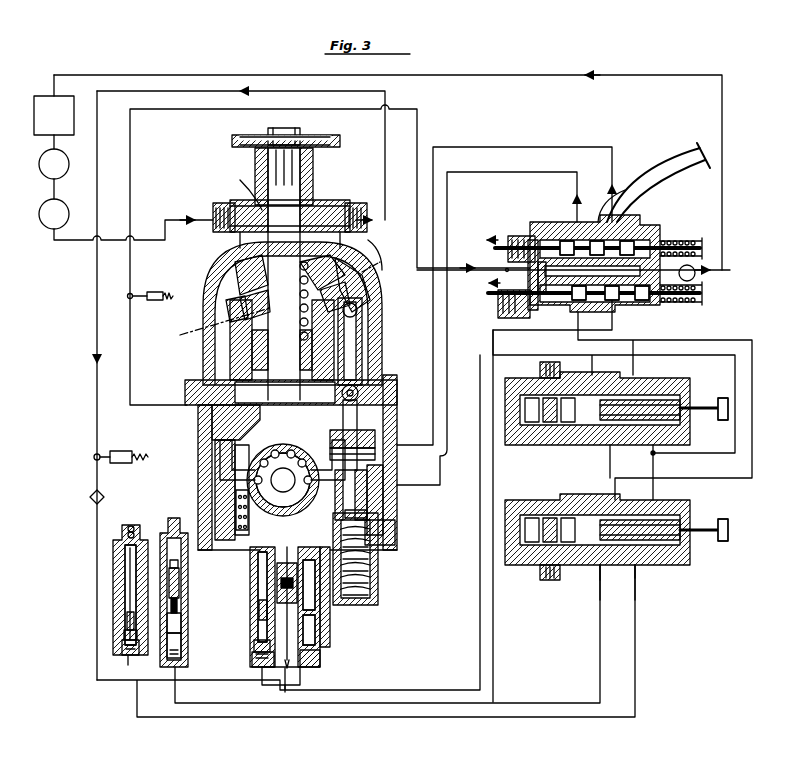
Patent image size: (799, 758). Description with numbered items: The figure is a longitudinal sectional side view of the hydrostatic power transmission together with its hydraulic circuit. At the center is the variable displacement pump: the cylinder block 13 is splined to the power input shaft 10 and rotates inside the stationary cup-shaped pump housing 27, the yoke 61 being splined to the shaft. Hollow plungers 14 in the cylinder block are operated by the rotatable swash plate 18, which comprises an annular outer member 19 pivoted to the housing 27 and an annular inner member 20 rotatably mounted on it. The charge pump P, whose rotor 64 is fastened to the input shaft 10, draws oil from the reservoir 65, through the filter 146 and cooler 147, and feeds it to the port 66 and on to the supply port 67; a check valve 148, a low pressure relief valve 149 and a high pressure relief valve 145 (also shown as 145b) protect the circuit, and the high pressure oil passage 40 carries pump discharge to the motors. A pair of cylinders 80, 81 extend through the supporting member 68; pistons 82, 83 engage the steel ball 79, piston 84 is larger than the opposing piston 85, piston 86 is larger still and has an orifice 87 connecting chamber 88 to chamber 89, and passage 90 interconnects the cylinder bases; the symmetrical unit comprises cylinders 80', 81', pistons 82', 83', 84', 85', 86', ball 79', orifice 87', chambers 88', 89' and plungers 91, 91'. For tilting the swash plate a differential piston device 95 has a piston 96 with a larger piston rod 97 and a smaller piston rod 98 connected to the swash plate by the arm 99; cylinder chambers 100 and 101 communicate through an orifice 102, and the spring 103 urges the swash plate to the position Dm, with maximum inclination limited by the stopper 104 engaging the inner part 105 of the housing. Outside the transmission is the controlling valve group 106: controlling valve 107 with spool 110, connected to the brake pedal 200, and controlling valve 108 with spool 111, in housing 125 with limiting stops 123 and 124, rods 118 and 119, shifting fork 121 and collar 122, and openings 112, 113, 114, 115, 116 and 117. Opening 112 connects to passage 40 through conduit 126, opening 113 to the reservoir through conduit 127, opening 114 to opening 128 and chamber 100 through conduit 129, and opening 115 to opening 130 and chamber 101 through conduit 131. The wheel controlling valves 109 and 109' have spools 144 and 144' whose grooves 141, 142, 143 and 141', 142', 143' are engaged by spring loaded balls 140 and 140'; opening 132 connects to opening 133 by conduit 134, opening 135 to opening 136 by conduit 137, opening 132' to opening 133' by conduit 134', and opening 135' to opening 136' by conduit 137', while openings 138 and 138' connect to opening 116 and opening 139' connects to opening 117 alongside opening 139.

The reservoir 65 is at (54, 112).
The filter 146 is at (54, 174).
The cooler 147 is at (126, 219).
The conduit 127 is at (487, 80).
The conduit 126 is at (418, 118).
The low pressure relief valve 149 is at (118, 448).
The check valve 148 is at (104, 494).
The power input shaft 10 is at (262, 175).
The pump P is at (243, 191).
The yoke 61 is at (305, 137).
The rotor 64 is at (330, 200).
The port 66 is at (214, 220).
The inner part of the housing 105 is at (365, 240).
The stopper 104 is at (345, 276).
The rotatable swash plate 18 is at (348, 286).
The hollow plungers 14 is at (368, 305).
The arm 99 is at (362, 322).
The annular outer member 19 is at (235, 290).
The annular inner member 20 is at (245, 312).
The high pressure relief valve 145 is at (165, 292).
The valve spool 145b is at (238, 505).
The position Dm is at (210, 322).
The pump housing 27 is at (205, 347).
The cylinder block 13 is at (210, 385).
The supporting member 68 is at (210, 425).
The high pressure oil passage 40 is at (215, 455).
The steel ball 79 is at (282, 469).
The piston 83 is at (283, 480).
The differential piston device 95 is at (310, 462).
The opening 130 is at (398, 450).
The piston 96 is at (375, 425).
The cylinder chamber 101 is at (340, 440).
The orifice 102 is at (330, 405).
The piston rod 98 is at (357, 405).
The cylinder chamber 100 is at (370, 485).
The opening 128 is at (383, 505).
The piston rod 97 is at (395, 535).
The spring 103 is at (378, 575).
The piston 85 is at (374, 571).
The piston 82 is at (251, 607).
The plunger 91 is at (247, 597).
The piston 84 is at (248, 611).
The cylinder 80 is at (248, 643).
The opening 132 is at (249, 662).
The cylinder 81 is at (281, 670).
The opening 135 is at (285, 691).
The supply port 67 is at (282, 620).
The passage 90 is at (287, 581).
The chamber 89 is at (321, 607).
The orifice 87 is at (323, 635).
The chamber 88 is at (322, 662).
The piston 86 is at (346, 598).
The steel ball 79' is at (123, 585).
The piston 82' is at (116, 595).
The plunger 91' is at (113, 594).
The piston 84' is at (115, 613).
The cylinder 80' is at (116, 634).
The opening 132' is at (114, 656).
The cylinder 81' is at (143, 665).
The piston 83' is at (174, 580).
The piston 85' is at (192, 572).
The chamber 89' is at (191, 586).
The piston 86' is at (192, 610).
The orifice 87' is at (190, 627).
The chamber 88' is at (190, 647).
The opening 135' is at (370, 634).
The conduit 134 is at (366, 536).
The conduit 137 is at (529, 501).
The conduit 134' is at (660, 591).
The conduit 137' is at (615, 600).
The conduit 129 is at (545, 147).
The conduit 131 is at (510, 172).
The opening 113 is at (590, 269).
The valve spool 110 is at (640, 233).
The controlling valve 107 is at (604, 234).
The controlling valve 108 is at (600, 307).
The valve spool 111 is at (660, 310).
The limiting stop 123 is at (512, 236).
The limiting stop 124 is at (500, 320).
The housing 125 is at (545, 222).
The rod 118 is at (472, 246).
The rod 119 is at (468, 310).
The opening 112 is at (530, 272).
The collar 122 is at (525, 315).
The shifting fork 121 is at (542, 315).
The opening 117 is at (572, 330).
The opening 116 is at (608, 318).
The opening 115 is at (580, 225).
The opening 114 is at (626, 201).
The brake pedal 200 is at (668, 168).
The controlling valve 109 is at (616, 407).
The controlling valve group 106 is at (640, 415).
The valve spool 144 is at (657, 424).
The groove 141 is at (516, 436).
The groove 142 is at (547, 440).
The groove 143 is at (578, 430).
The spring loaded ball 140 is at (530, 368).
The opening 136 is at (610, 359).
The opening 133 is at (653, 358).
The opening 138 is at (602, 456).
The opening 139 is at (638, 450).
The controlling valve 109' is at (618, 533).
The valve spool 144' is at (659, 511).
The groove 141' is at (517, 510).
The groove 142' is at (542, 510).
The groove 143' is at (574, 512).
The opening 138' is at (604, 491).
The opening 139' is at (636, 491).
The spring loaded ball 140' is at (566, 586).
The opening 136' is at (616, 580).
The opening 133' is at (656, 579).